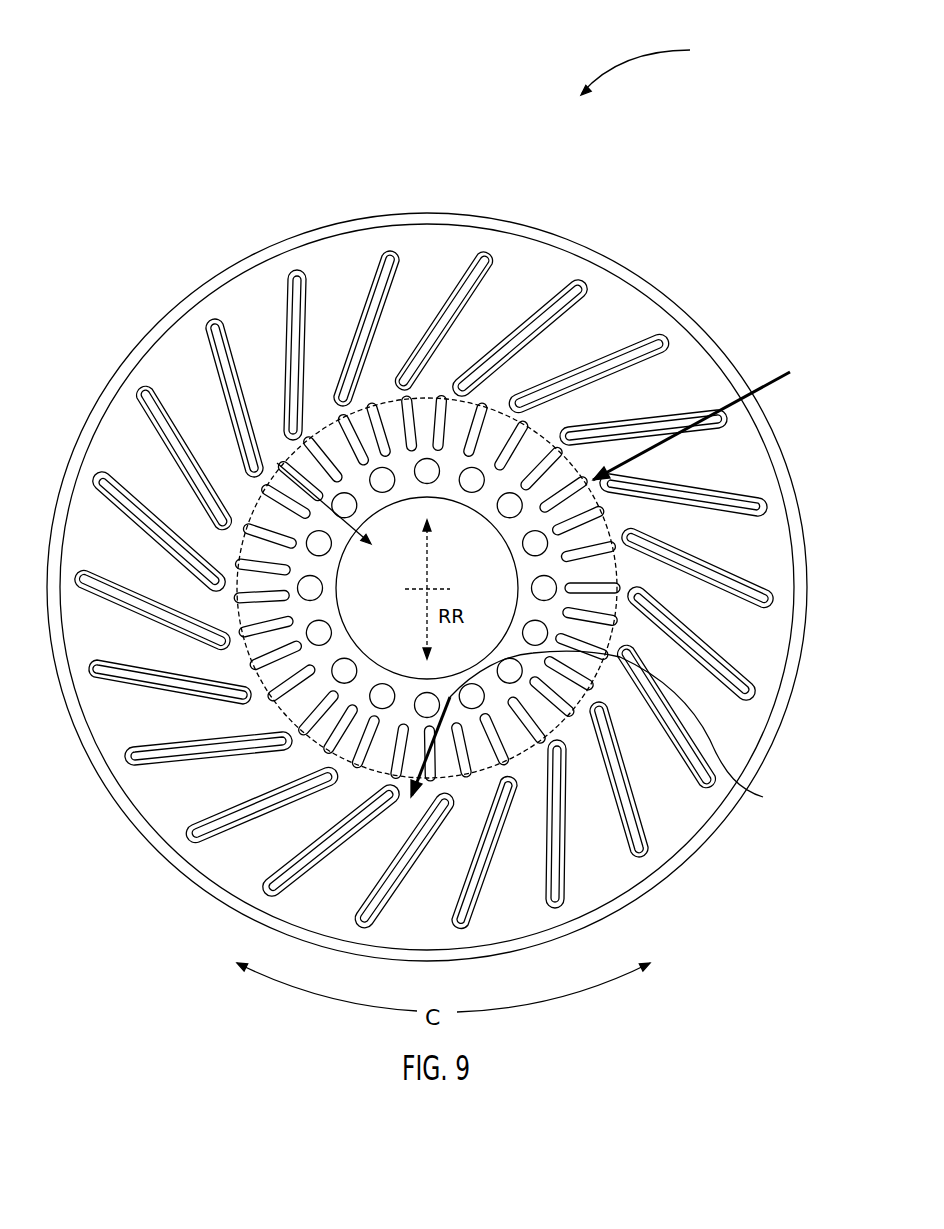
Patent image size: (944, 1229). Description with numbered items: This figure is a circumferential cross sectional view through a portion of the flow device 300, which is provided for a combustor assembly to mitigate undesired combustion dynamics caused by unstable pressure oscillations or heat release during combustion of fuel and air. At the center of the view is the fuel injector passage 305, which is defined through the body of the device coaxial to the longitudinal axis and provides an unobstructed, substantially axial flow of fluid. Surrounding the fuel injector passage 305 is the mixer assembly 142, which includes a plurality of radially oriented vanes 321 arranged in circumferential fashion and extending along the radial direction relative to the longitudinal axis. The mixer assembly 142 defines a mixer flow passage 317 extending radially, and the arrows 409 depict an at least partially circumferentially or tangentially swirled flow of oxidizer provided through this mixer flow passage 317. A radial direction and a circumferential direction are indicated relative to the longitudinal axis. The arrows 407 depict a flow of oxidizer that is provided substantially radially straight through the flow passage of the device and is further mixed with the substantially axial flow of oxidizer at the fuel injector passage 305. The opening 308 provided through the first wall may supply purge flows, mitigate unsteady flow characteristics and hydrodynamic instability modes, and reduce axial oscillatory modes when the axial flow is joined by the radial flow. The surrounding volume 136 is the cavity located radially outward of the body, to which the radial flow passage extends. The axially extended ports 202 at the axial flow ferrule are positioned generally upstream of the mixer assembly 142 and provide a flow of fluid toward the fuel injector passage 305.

The flow device 300 is at (659, 67).
The mixer flow passage 317 is at (438, 243).
The radially oriented vanes 321 is at (383, 252).
The arrows depicting swirled flow of oxidizer 409 is at (448, 417).
The mixer assembly 142 is at (712, 418).
The arrows depicting flow of oxidizer 407 is at (395, 582).
The fuel injector passage 305 is at (433, 500).
The opening 308 is at (763, 797).
The surrounding volume 136 is at (862, 790).
The axially extended ports 202 is at (385, 690).